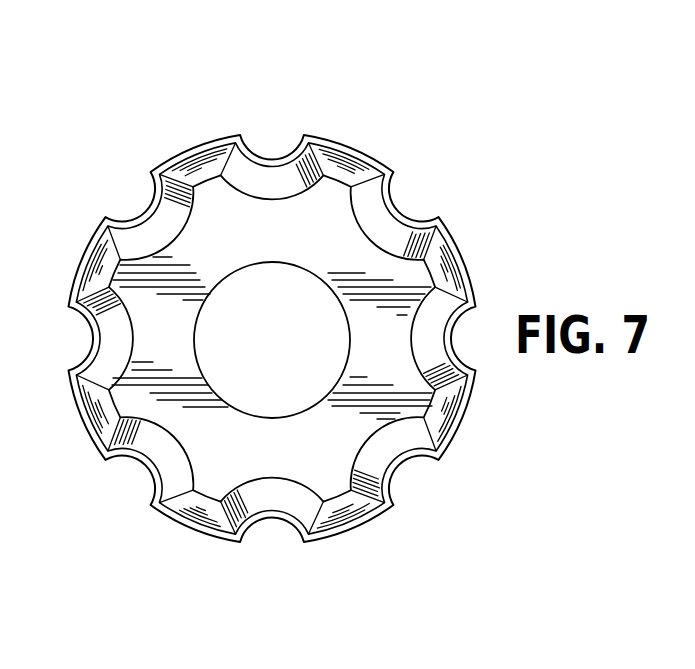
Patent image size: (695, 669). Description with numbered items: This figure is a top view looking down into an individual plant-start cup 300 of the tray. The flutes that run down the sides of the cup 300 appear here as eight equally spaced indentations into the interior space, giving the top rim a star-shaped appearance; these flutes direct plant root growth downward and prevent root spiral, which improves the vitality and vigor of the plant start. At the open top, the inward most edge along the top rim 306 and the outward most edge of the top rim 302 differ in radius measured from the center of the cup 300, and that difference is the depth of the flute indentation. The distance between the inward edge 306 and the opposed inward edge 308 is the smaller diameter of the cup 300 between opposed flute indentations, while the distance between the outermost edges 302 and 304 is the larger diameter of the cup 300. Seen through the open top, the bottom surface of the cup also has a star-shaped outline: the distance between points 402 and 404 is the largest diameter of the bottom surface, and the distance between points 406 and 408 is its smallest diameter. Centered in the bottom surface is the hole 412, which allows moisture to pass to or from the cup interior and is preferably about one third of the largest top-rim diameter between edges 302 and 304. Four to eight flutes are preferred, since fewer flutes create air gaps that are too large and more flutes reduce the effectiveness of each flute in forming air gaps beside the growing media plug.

The cup 300 is at (180, 129).
The outward most edge of the top rim 302 is at (376, 153).
The outermost edge of the top rim 304 is at (202, 546).
The inward most edge along the top rim 306 is at (416, 219).
The inward most edge along the top rim 308 is at (126, 474).
The edge of the bottom surface 402 is at (342, 183).
The edge of the bottom surface 404 is at (199, 506).
The edge of the bottom surface 406 is at (366, 241).
The edge of the bottom surface 408 is at (182, 437).
The hole 412 is at (300, 402).